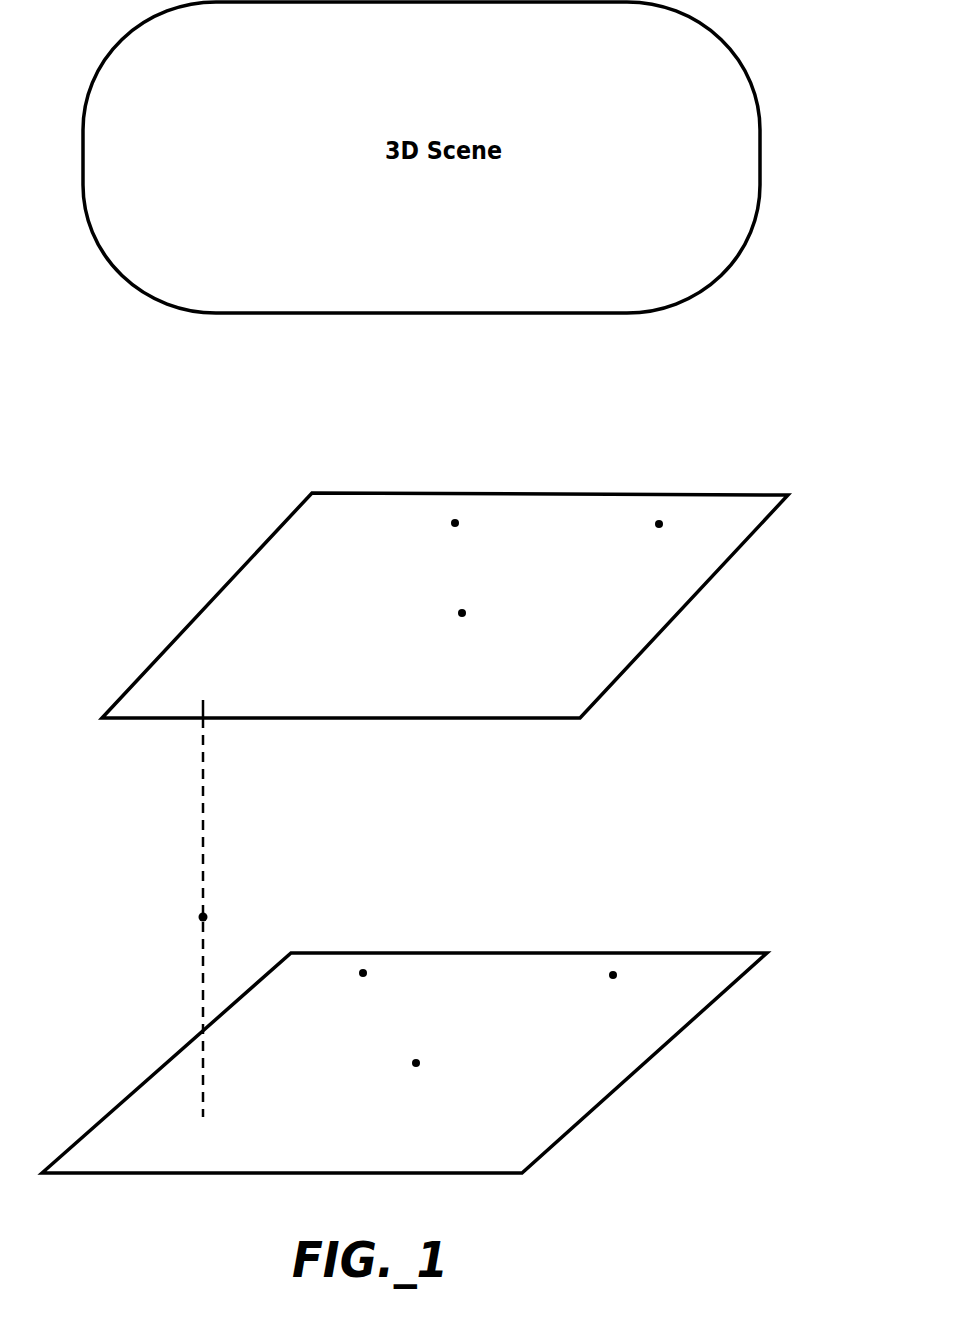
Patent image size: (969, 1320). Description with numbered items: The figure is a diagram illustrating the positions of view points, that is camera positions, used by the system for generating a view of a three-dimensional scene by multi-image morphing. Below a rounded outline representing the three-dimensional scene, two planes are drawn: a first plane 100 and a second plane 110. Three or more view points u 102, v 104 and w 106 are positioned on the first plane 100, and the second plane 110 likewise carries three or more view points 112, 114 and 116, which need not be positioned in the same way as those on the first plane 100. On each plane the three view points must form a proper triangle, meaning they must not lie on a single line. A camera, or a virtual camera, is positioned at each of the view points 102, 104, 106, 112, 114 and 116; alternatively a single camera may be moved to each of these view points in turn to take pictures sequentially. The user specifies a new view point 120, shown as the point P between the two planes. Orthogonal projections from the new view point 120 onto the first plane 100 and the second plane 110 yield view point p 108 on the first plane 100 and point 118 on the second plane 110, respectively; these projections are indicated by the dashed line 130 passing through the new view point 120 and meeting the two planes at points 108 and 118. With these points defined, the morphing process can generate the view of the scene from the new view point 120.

The plane_1 100 is at (413, 1063).
The view point u 102 is at (352, 969).
The view point v 104 is at (631, 979).
The view point w 106 is at (437, 1052).
The view point p 108 is at (228, 1138).
The plane_2 110 is at (479, 605).
The view point 112 is at (430, 519).
The view point 114 is at (683, 514).
The view point 116 is at (486, 616).
The point 118 is at (230, 697).
The new view point 120 is at (203, 917).
The ray through points x and x_p 130 is at (203, 828).